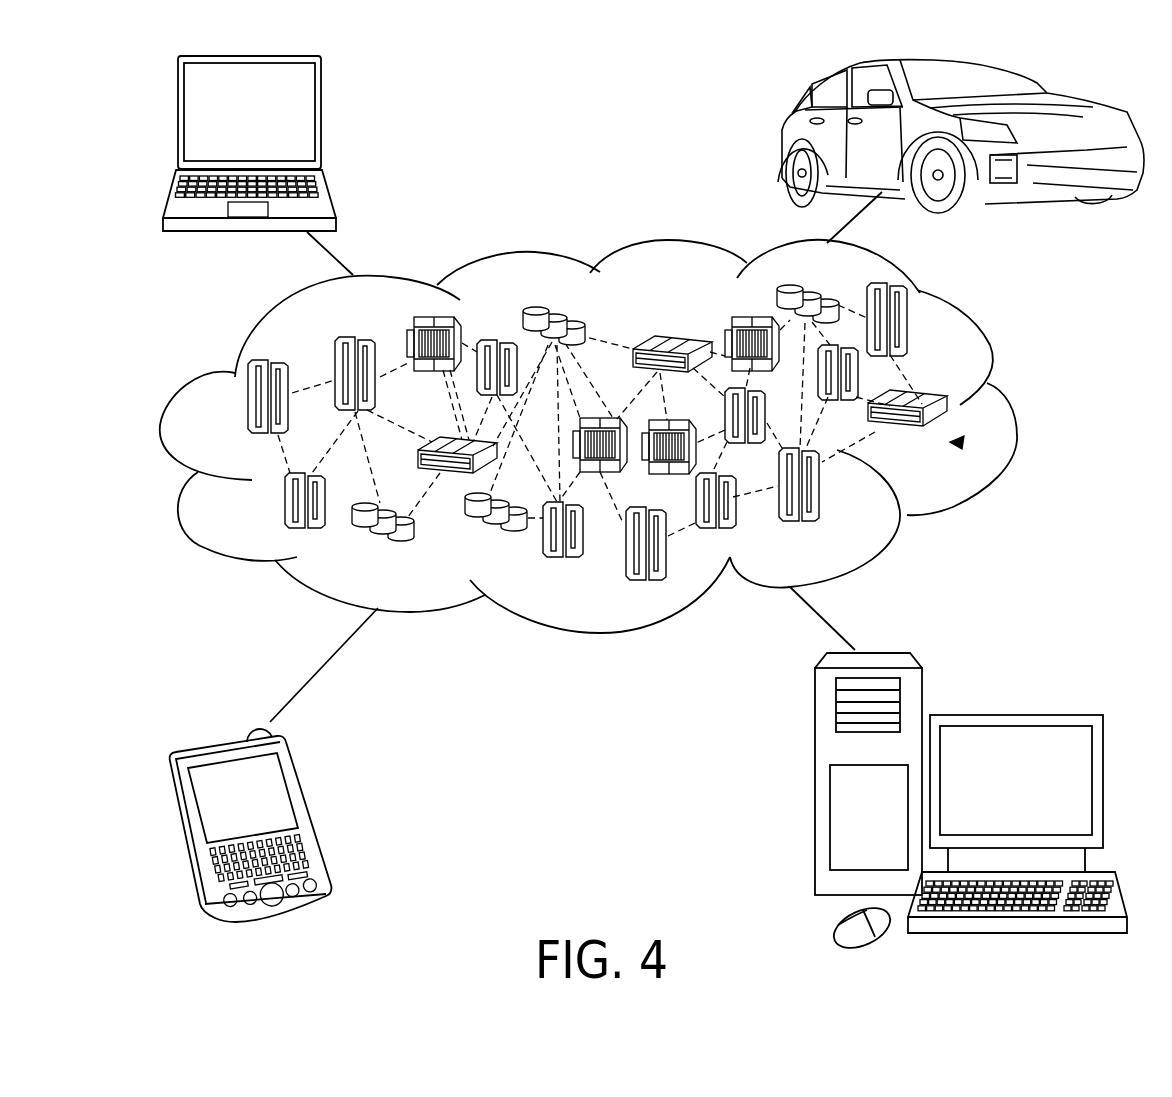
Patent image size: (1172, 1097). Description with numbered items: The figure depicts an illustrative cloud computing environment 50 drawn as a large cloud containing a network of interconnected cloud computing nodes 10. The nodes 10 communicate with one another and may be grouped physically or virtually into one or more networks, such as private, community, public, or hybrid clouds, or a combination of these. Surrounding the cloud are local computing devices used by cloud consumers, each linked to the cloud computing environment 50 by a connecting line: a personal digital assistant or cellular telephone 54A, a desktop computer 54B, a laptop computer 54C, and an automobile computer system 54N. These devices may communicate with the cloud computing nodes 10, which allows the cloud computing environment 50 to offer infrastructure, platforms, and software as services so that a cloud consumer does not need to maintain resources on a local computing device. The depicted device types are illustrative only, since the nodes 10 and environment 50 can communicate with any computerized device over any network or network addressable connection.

The cloud computing nodes 10 is at (957, 443).
The cloud computing environment 50 is at (1013, 408).
The personal digital assistant or cellular telephone 54A is at (312, 812).
The desktop computer 54B is at (1013, 713).
The laptop computer 54C is at (322, 121).
The automobile computer system 54N is at (784, 138).